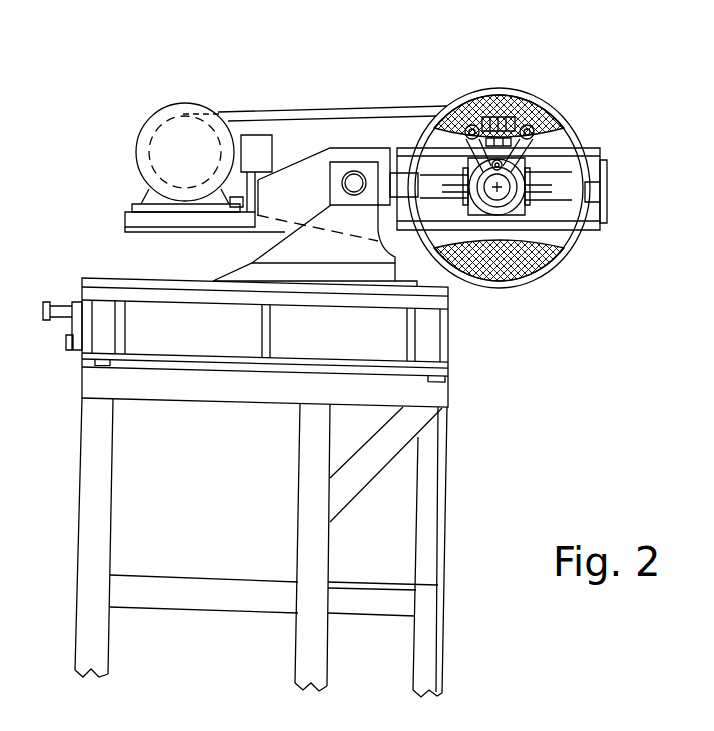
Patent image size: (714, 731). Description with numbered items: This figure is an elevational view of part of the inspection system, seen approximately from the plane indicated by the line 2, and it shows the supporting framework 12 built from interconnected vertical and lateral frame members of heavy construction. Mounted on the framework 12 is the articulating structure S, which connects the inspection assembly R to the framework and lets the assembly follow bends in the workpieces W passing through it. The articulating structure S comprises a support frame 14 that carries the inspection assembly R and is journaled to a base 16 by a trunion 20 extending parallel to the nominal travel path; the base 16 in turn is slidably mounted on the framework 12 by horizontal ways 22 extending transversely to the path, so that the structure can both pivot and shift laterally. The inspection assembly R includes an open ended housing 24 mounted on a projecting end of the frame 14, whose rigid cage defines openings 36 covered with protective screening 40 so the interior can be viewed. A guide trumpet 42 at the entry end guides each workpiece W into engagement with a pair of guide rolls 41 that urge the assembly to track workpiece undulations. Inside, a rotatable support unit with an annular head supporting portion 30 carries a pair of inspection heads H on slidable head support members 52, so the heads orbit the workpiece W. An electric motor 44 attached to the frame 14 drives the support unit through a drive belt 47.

The section line 2 is at (523, 0).
The supporting framework 12 is at (447, 478).
The support frame 14 is at (288, 163).
The base 16 is at (262, 272).
The trunion 20 is at (343, 163).
The horizontal ways 22 is at (410, 296).
The housing 24 is at (488, 87).
The head supporting portion 30 is at (495, 178).
The openings 36 is at (567, 143).
The protective screening 40 is at (517, 104).
The guide rolls 41 is at (606, 171).
The guide trumpet 42 is at (560, 252).
The electric motor 44 is at (134, 137).
The drive belt 47 is at (251, 112).
The head support member 52 is at (497, 137).
The articulating structure S is at (280, 137).
The inspection heads H is at (477, 158).
The workpiece W is at (522, 200).
The inspection assembly R is at (568, 277).